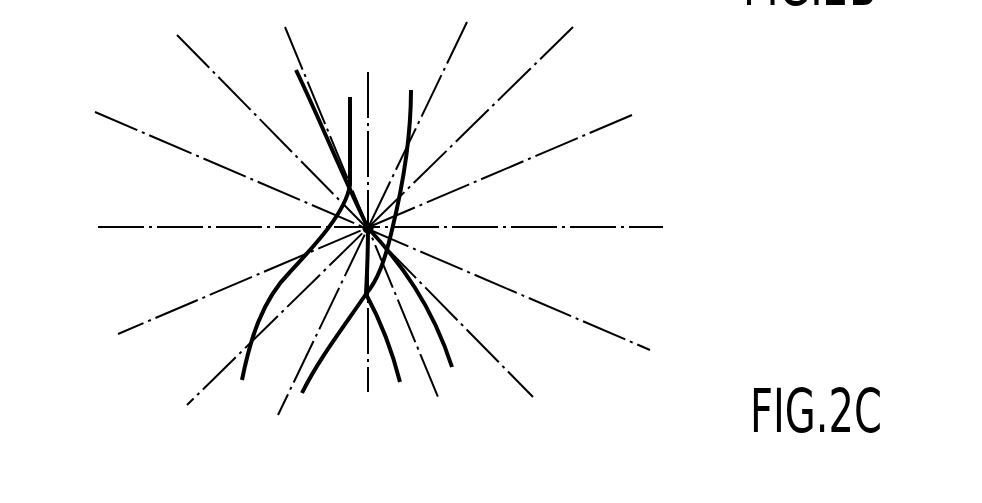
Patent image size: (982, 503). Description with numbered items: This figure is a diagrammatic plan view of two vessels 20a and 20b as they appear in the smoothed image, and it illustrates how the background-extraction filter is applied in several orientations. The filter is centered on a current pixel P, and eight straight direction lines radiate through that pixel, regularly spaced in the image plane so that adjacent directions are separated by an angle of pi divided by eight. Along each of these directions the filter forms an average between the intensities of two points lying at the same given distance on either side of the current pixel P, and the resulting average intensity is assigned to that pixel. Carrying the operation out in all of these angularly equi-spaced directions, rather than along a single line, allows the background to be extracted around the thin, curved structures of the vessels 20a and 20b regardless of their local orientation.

The current pixel P is at (388, 224).
The vessel 20a is at (414, 154).
The vessel 20b is at (460, 348).